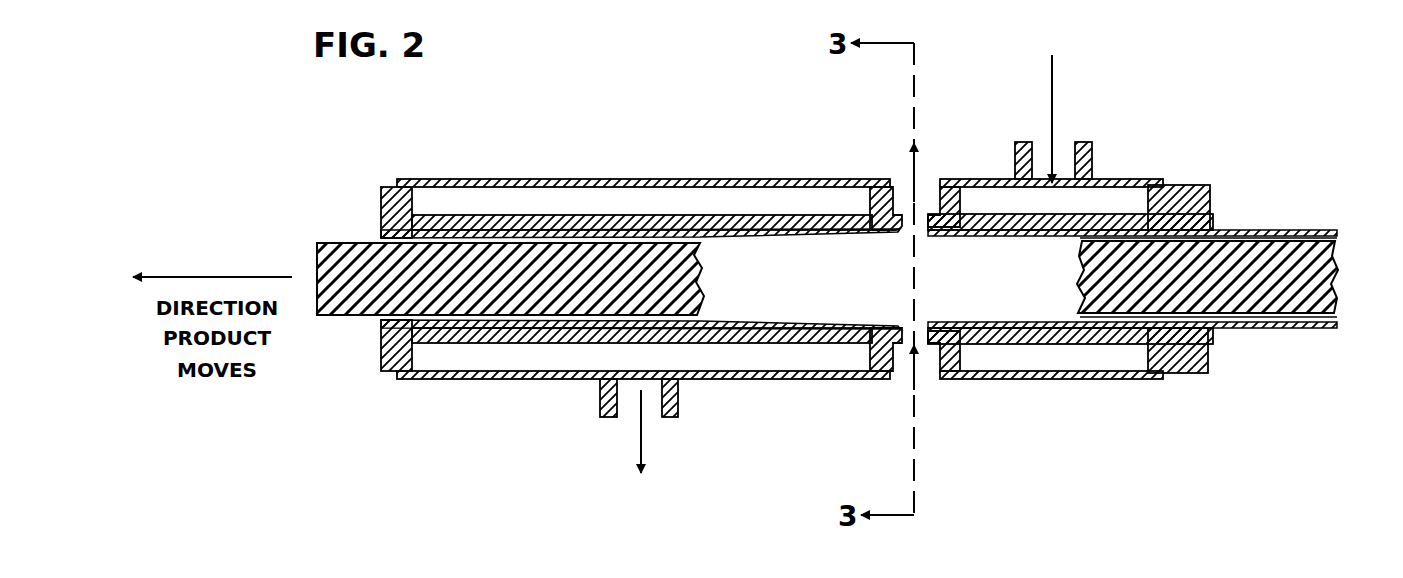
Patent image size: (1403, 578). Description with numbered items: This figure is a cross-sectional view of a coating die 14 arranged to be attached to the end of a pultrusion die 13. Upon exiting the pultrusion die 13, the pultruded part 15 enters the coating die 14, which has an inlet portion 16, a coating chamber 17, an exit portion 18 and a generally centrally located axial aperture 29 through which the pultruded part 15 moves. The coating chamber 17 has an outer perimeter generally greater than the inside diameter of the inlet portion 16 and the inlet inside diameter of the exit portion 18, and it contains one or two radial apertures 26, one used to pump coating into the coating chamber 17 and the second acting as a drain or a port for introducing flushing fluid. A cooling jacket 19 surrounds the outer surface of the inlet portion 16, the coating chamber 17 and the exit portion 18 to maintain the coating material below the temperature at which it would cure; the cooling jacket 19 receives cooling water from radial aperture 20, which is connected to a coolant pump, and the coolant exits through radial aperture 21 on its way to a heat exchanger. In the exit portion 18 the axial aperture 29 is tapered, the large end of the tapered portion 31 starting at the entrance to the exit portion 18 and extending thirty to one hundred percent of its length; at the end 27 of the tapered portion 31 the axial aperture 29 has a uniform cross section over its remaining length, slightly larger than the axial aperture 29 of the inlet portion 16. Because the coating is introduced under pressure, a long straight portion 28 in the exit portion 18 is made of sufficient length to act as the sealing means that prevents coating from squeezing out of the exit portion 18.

The pultrusion die 13 is at (1290, 225).
The coating die 14 is at (760, 379).
The pultruded part 15 is at (362, 298).
The inlet portion 16 is at (1173, 367).
The coating chamber 17 is at (880, 180).
The exit portion 18 is at (388, 220).
The cooling jacket 19 is at (493, 198).
The radial aperture 20 is at (1063, 145).
The radial aperture 21 is at (628, 408).
The radial apertures 26 is at (932, 178).
The end of tapered portion 27 is at (638, 228).
The long straight portion 28 is at (488, 327).
The axial aperture 29 is at (820, 291).
The tapered portion 31 is at (777, 330).